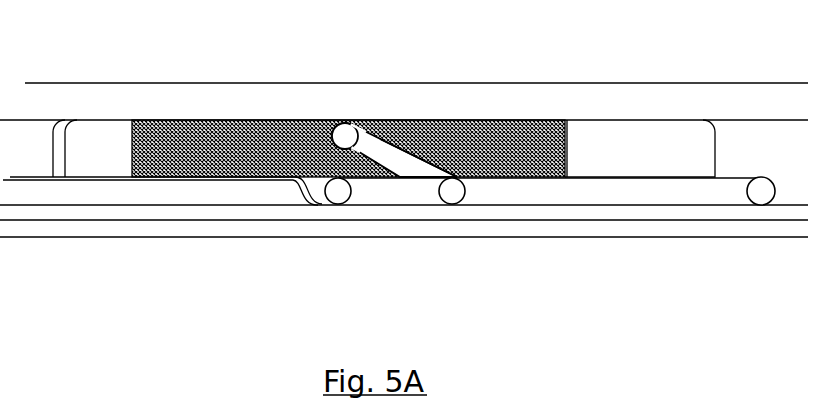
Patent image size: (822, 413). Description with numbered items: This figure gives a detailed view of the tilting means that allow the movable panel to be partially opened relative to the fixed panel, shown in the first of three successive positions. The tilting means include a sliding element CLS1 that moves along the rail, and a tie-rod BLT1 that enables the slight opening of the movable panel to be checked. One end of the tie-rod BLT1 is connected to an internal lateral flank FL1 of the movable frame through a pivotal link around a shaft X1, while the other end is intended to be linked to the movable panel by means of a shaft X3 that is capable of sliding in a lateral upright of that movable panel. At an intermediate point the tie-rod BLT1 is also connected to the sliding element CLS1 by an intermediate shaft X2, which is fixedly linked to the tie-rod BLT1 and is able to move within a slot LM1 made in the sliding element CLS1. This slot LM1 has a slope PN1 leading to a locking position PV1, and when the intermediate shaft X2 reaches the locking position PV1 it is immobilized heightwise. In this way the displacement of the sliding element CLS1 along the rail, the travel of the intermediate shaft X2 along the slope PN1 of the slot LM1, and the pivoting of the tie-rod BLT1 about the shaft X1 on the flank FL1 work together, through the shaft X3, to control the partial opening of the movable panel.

The sliding element CLS1 is at (203, 146).
The locking position PV1 is at (347, 133).
The slope PN1 is at (418, 167).
The slot LM1 is at (437, 165).
The internal lateral flank FL1 is at (768, 142).
The shaft X3 is at (338, 192).
The intermediate shaft X2 is at (452, 192).
The tie-rod BLT1 is at (583, 193).
The shaft X1 is at (760, 192).